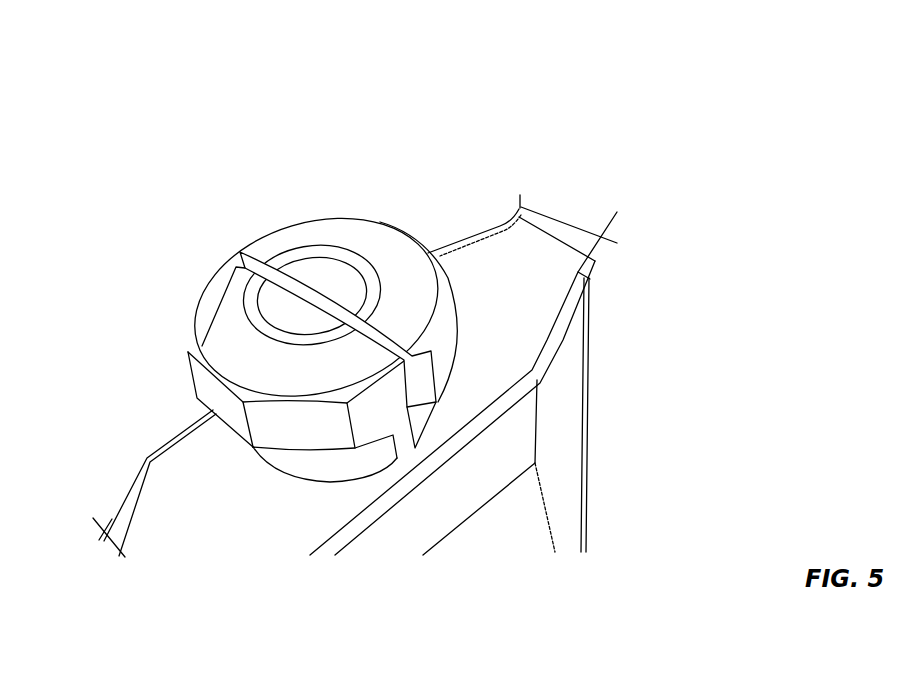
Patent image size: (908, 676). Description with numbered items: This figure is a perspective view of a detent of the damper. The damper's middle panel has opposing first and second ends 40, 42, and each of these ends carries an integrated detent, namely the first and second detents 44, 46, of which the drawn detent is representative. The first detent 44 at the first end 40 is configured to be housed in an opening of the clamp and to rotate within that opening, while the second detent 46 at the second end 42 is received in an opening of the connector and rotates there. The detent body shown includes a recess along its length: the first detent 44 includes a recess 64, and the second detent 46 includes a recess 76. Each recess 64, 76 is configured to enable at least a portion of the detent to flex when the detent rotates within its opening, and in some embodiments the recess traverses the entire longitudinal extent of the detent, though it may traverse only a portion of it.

The first end 40 is at (421, 376).
The second end 42 is at (510, 325).
The first detent 44 is at (335, 256).
The second detent 46 is at (373, 181).
The recess 64 is at (314, 291).
The recess 76 is at (243, 251).